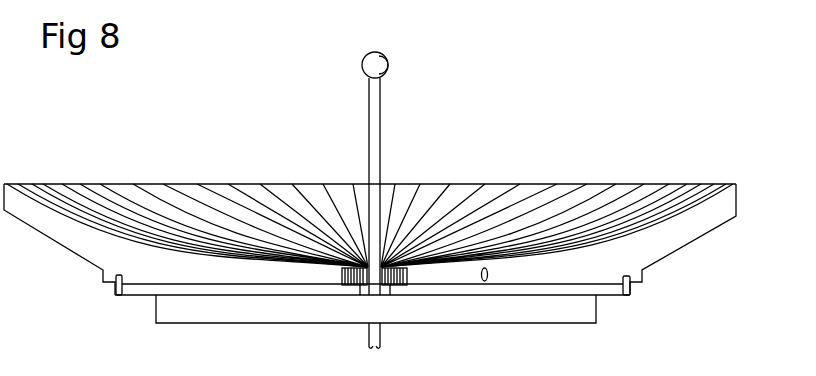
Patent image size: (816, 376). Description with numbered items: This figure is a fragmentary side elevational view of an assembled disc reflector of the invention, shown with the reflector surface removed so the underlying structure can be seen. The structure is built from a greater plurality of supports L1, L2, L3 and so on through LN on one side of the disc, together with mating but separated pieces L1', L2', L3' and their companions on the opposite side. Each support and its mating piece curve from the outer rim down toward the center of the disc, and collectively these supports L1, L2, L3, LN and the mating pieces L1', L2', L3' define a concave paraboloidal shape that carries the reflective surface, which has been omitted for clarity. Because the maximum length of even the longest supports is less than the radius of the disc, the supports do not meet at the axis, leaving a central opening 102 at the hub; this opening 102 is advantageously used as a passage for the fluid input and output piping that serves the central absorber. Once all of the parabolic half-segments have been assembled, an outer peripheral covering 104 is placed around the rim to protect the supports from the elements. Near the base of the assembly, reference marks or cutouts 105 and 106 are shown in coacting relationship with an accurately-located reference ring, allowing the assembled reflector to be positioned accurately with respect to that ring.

The support L1 is at (187, 202).
The support L2 is at (193, 205).
The support L3 is at (200, 203).
The support LN is at (365, 187).
The mating separated piece L1' is at (561, 206).
The mating separated piece L2' is at (545, 198).
The mating separated piece L3' is at (532, 198).
The central opening 102 is at (342, 287).
The outer peripheral covering 104 is at (55, 245).
The reference mark or cutout 105 is at (124, 279).
The reference mark or cutout 106 is at (623, 283).